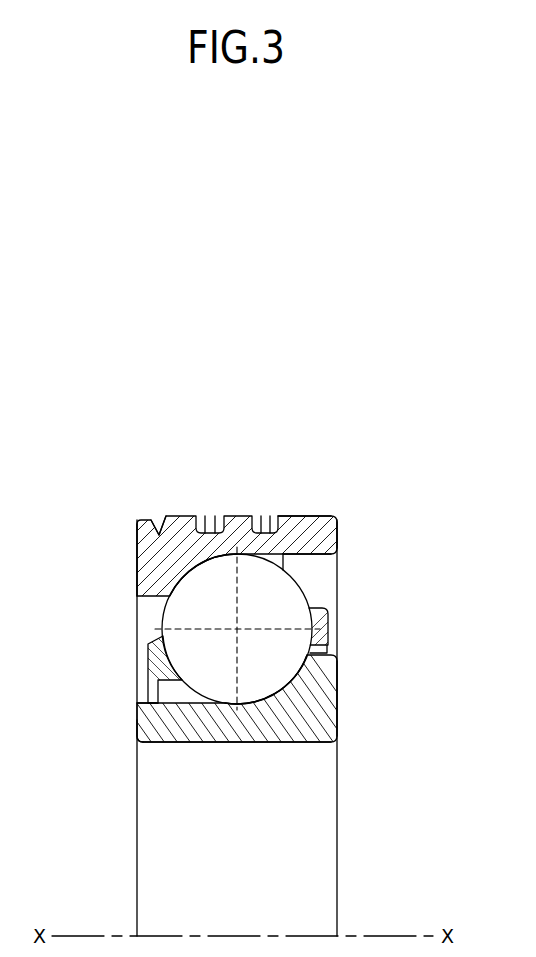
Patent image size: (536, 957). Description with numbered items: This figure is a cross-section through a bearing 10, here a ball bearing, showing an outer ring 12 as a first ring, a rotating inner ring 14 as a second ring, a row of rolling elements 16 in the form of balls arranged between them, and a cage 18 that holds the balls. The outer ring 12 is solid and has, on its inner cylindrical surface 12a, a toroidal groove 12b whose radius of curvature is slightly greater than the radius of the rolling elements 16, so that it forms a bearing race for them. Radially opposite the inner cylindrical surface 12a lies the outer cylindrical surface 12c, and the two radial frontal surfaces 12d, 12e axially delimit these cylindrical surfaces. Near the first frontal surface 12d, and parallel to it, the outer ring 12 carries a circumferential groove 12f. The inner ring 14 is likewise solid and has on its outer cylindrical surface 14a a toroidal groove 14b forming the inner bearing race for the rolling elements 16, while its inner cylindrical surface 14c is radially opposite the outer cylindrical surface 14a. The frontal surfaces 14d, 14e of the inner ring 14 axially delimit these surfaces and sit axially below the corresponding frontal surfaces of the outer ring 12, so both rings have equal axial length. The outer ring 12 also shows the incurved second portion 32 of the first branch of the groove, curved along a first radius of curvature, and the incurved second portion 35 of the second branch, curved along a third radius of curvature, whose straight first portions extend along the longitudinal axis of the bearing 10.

The bearing 10 is at (368, 466).
The outer ring 12 is at (346, 528).
The inner cylindrical surface 12a is at (305, 555).
The toroidal groove 12b is at (243, 555).
The outer cylindrical surface 12c is at (303, 516).
The first frontal surface 12d is at (137, 573).
The second frontal surface 12e is at (337, 540).
The circumferential groove 12f is at (160, 526).
The inner ring 14 is at (346, 680).
The outer cylindrical surface 14a is at (148, 690).
The toroidal groove 14b is at (287, 687).
The inner cylindrical surface 14c is at (302, 742).
The frontal surface 14d is at (140, 735).
The frontal surface 14e is at (337, 716).
The rolling elements 16 is at (281, 603).
The cage 18 is at (165, 662).
The second portion 32 is at (205, 516).
The second portion 35 is at (268, 516).